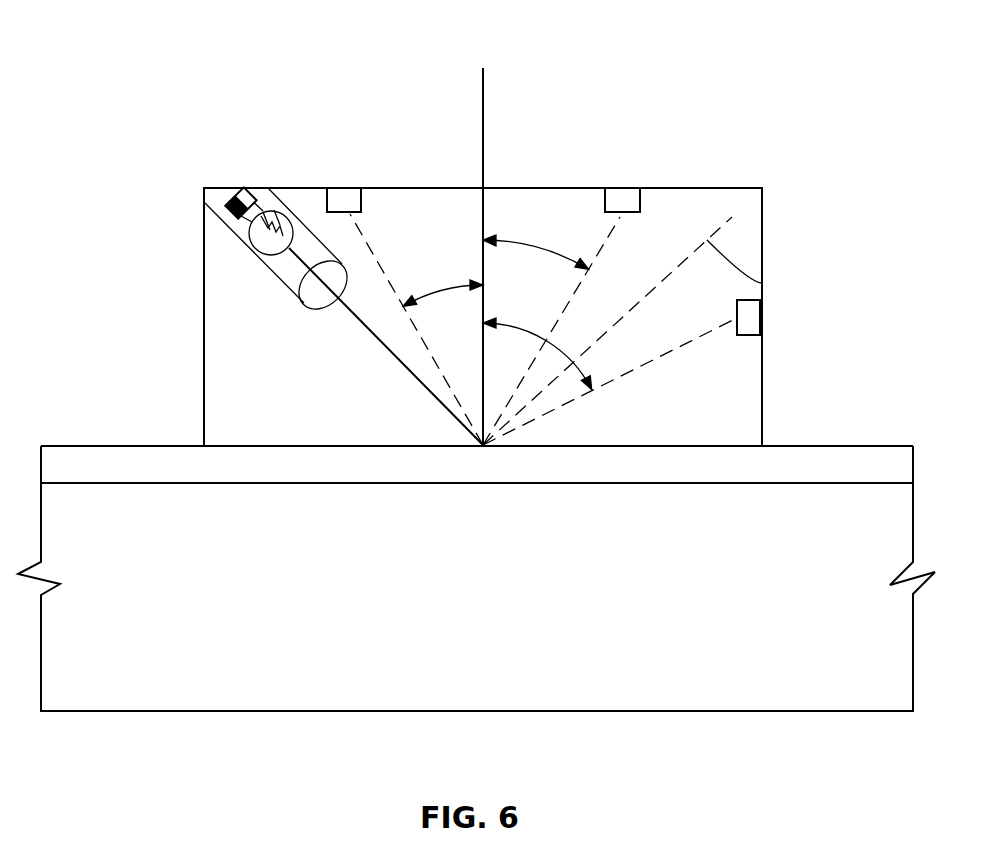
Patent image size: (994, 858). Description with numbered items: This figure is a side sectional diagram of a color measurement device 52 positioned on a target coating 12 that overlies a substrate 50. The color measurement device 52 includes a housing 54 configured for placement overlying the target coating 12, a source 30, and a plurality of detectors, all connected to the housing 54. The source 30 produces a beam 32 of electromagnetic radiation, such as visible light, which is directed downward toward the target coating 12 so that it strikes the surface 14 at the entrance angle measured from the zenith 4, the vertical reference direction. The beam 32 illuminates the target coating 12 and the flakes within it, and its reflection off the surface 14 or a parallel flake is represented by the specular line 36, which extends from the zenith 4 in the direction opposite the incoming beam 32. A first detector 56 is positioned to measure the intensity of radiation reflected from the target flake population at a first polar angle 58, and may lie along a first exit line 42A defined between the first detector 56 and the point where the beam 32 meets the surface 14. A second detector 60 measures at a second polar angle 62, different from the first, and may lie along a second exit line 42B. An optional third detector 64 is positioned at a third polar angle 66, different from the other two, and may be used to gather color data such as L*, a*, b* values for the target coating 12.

The zenith 4 is at (483, 88).
The target coating 12 is at (62, 458).
The surface 14 is at (110, 440).
The source 30 is at (243, 195).
The beam 32 is at (375, 337).
The specular line 36 is at (762, 283).
The first exit line 42A is at (609, 236).
The second exit line 42B is at (645, 364).
The substrate 50 is at (798, 638).
The color measurement device 52 is at (146, 46).
The housing 54 is at (408, 188).
The first detector 56 is at (622, 200).
The first polar angle 58 is at (527, 243).
The second detector 60 is at (750, 318).
The second polar angle 62 is at (520, 328).
The third detector 64 is at (340, 200).
The third polar angle 66 is at (443, 288).